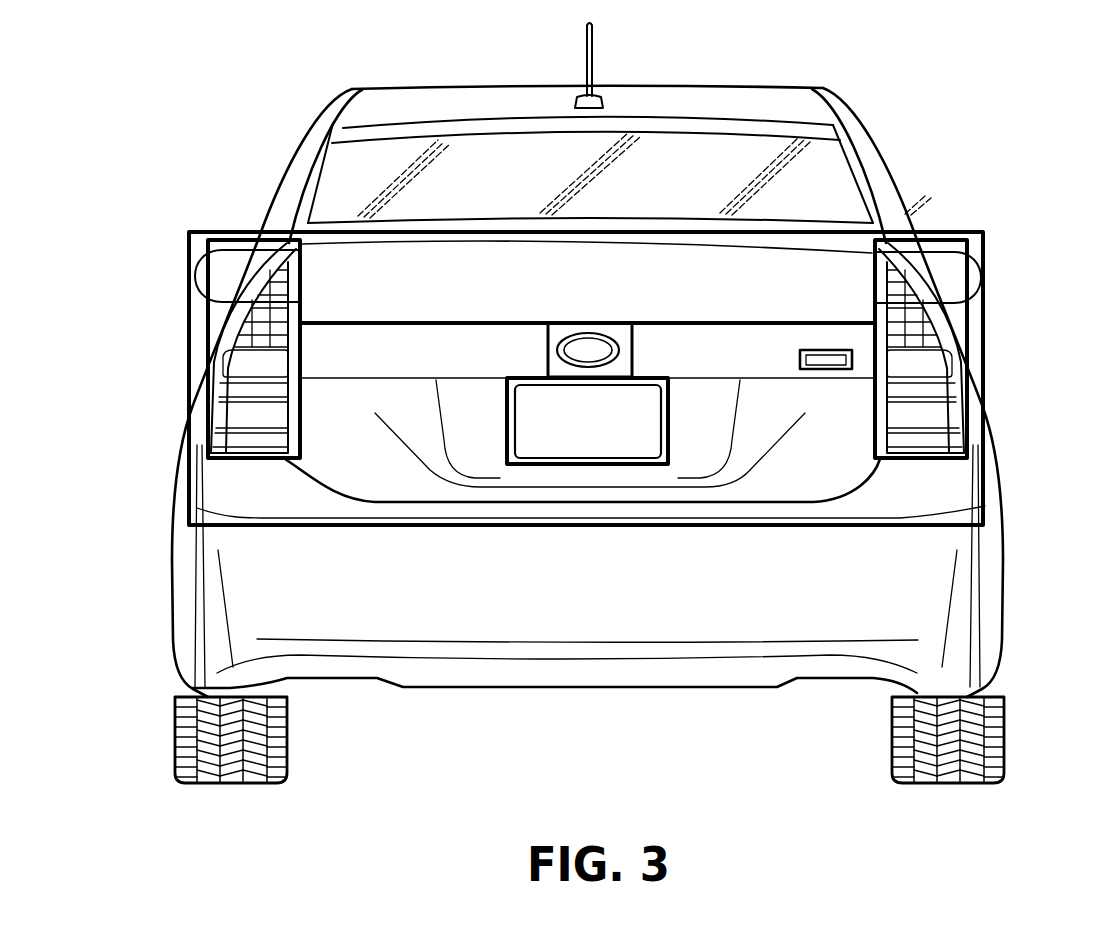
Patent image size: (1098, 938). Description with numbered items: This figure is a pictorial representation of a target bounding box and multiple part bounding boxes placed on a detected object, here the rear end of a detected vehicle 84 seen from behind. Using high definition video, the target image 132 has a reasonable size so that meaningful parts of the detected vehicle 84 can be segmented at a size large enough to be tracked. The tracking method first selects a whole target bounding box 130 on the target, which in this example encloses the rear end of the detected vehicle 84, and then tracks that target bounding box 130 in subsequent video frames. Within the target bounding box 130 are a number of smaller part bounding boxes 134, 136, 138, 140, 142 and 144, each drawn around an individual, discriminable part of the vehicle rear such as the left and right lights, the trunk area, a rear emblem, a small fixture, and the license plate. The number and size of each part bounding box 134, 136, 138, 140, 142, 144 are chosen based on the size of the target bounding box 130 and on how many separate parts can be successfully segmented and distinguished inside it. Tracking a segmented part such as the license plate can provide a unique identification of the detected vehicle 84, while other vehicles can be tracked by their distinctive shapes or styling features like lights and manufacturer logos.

The detected vehicle 84 is at (304, 136).
The target bounding box 130 is at (180, 274).
The target image 132 is at (205, 572).
The part bounding box 134 is at (207, 337).
The part bounding box 136 is at (979, 322).
The part bounding box 138 is at (470, 326).
The part bounding box 140 is at (632, 350).
The part bounding box 142 is at (799, 361).
The part bounding box 144 is at (668, 420).